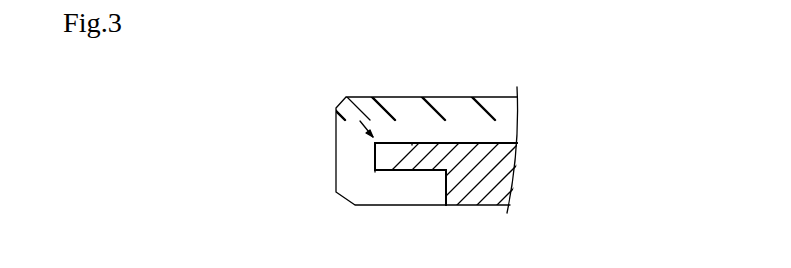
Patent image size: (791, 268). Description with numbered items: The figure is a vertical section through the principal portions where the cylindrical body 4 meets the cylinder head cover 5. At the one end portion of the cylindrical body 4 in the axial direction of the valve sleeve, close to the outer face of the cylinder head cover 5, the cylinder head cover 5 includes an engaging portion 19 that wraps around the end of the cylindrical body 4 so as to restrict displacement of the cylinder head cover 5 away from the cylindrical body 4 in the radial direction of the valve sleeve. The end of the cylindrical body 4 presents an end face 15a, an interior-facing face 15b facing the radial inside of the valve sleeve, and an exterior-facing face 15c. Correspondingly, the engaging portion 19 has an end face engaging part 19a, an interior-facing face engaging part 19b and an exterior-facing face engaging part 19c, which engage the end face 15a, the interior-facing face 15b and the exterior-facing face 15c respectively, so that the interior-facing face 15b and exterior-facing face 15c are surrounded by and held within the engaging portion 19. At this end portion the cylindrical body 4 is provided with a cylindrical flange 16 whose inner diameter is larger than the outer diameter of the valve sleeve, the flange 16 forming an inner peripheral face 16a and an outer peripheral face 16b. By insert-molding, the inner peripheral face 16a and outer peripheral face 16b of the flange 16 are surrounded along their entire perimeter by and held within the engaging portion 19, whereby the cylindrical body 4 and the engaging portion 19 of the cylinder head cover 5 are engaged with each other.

The cylindrical body 4 is at (507, 184).
The cylinder head cover 5 is at (483, 105).
The end face 15a is at (373, 161).
The interior-facing face 15b is at (393, 172).
The exterior-facing face 15c is at (392, 143).
The flange 16 is at (375, 154).
The inner peripheral face 16a is at (430, 173).
The outer peripheral face 16b is at (428, 143).
The engaging portion 19 is at (339, 108).
The end face engaging part 19a is at (377, 172).
The interior-facing face engaging part 19b is at (433, 160).
The exterior-facing face engaging part 19c is at (412, 146).